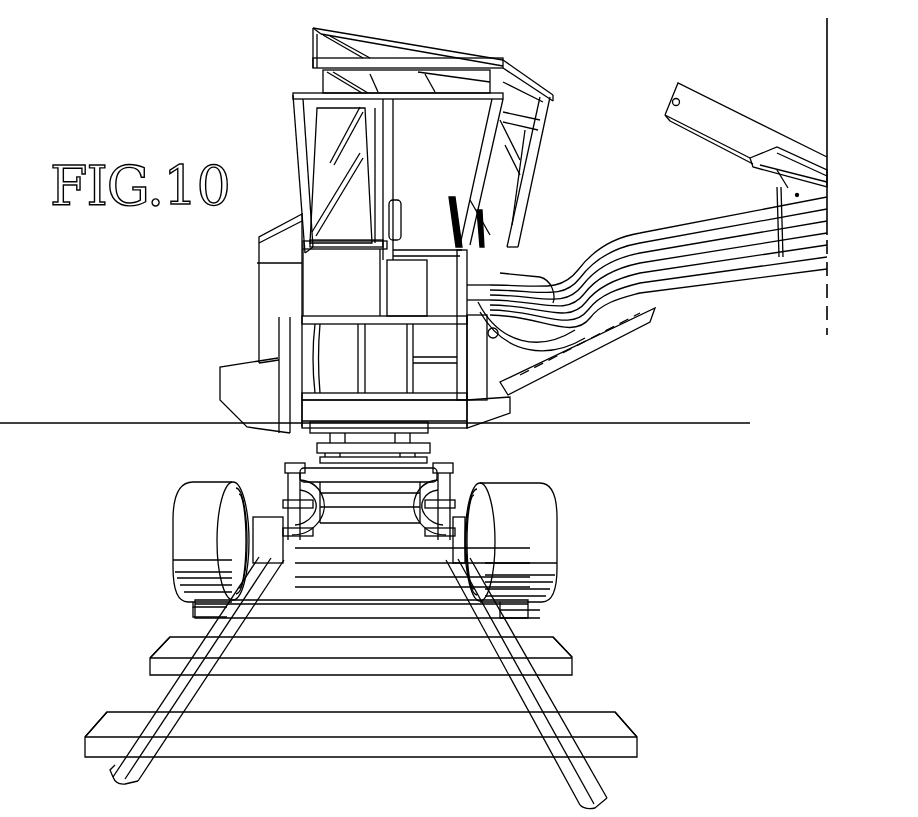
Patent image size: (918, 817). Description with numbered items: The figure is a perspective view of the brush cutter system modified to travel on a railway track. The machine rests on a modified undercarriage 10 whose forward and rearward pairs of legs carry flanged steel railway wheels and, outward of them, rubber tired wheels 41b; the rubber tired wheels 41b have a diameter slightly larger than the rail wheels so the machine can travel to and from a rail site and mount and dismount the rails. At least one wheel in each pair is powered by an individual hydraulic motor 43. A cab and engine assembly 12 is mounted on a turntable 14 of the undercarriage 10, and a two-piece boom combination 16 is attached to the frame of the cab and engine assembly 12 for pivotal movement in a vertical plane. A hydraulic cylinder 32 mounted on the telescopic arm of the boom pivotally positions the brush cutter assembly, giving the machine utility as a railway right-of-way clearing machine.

The undercarriage 10 is at (462, 465).
The cab and engine assembly 12 is at (286, 131).
The turntable 14 is at (313, 450).
The boom combination 16 is at (677, 209).
The hydraulic cylinder 32 is at (288, 492).
The rubber tired wheels 41b is at (177, 498).
The hydraulic motor 43 is at (276, 557).